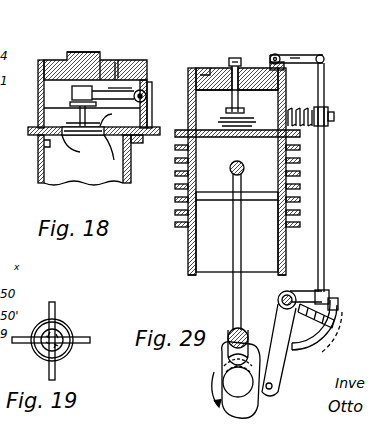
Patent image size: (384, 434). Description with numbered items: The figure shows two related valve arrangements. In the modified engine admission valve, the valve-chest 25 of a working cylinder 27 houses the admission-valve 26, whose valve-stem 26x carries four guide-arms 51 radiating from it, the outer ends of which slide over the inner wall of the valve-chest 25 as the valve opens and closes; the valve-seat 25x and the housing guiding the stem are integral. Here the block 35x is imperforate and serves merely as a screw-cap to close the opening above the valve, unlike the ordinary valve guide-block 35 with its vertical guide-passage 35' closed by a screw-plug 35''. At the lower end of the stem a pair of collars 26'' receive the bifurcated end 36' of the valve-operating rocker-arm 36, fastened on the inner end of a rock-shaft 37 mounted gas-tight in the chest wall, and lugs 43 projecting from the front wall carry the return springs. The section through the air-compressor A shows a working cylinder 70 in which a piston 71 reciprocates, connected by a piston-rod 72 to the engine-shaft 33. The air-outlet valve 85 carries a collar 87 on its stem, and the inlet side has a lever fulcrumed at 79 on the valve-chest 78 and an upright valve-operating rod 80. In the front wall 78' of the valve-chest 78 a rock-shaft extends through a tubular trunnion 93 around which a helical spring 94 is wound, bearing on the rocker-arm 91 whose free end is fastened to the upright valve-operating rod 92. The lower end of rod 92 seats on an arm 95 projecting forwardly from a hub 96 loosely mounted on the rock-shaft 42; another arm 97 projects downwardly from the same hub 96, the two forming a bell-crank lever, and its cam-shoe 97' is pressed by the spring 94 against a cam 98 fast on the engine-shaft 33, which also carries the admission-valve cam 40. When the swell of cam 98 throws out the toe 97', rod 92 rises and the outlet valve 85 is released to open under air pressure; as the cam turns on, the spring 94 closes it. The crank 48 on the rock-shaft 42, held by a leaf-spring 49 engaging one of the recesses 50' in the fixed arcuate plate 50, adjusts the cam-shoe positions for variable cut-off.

In FIG. 18, the valve-chest 25 is at (40, 60).
In FIG. 18, the imperforate block 35x is at (82, 52).
In FIG. 18, the bifurcated end of rocker-arm 36' is at (113, 58).
In FIG. 18, the valve-operating rocker-arm 36 is at (128, 65).
In FIG. 18, the rock-shaft 37 is at (143, 90).
In FIG. 18, the collars 26'' is at (90, 105).
In FIG. 18, the guide-arms 51 is at (55, 115).
In FIG. 19, the guide-arms 51 is at (57, 312).
In FIG. 18, the working cylinder 27 is at (52, 178).
In FIG. 18, the valve-seat 25x is at (52, 142).
In FIG. 18, the admission-valve 26 is at (70, 154).
In FIG. 19, the admission-valve 26 is at (36, 348).
In FIG. 18, the valve-stem 26x is at (110, 142).
In FIG. 19, the valve-stem 26x is at (70, 330).
In FIG. 29, the valve-chest 78 is at (231, 171).
In FIG. 29, the valve guide-block 35 is at (202, 58).
In FIG. 29, the guide-passage 35' is at (229, 43).
In FIG. 29, the screw-plug 35'' is at (248, 68).
In FIG. 29, the collar 87 is at (228, 122).
In FIG. 29, the fulcrum 79 is at (278, 55).
In FIG. 29, the valve-operating rod 80 is at (286, 70).
In FIG. 29, the front wall of valve-chest 78' is at (324, 45).
In FIG. 29, the tubular trunnion 93 is at (300, 106).
In FIG. 29, the helical spring 94 is at (327, 108).
In FIG. 29, the rocker-arm 91 is at (334, 117).
In FIG. 29, the valve-operating rod 92 is at (326, 191).
In FIG. 29, the air-compressor A is at (340, 166).
In FIG. 29, the air-outlet valve 85 is at (226, 143).
In FIG. 29, the piston 71 is at (262, 184).
In FIG. 29, the piston-rod 72 is at (233, 236).
In FIG. 29, the working cylinder 70 is at (194, 278).
In FIG. 29, the engine-shaft 33 is at (246, 332).
In FIG. 29, the cam 40 is at (240, 410).
In FIG. 29, the lugs 43 is at (228, 360).
In FIG. 29, the cam 98 is at (222, 376).
In FIG. 29, the hub 96 is at (278, 296).
In FIG. 29, the rock-shaft 42 is at (301, 292).
In FIG. 29, the arm 95 is at (328, 290).
In FIG. 29, the leaf-spring 49 is at (336, 310).
In FIG. 29, the arcuate plate 50 is at (355, 296).
In FIG. 29, the crank 48 is at (313, 343).
In FIG. 29, the recesses 50' is at (346, 332).
In FIG. 29, the arm 97 is at (291, 350).
In FIG. 29, the cam-shoe 97' is at (292, 393).